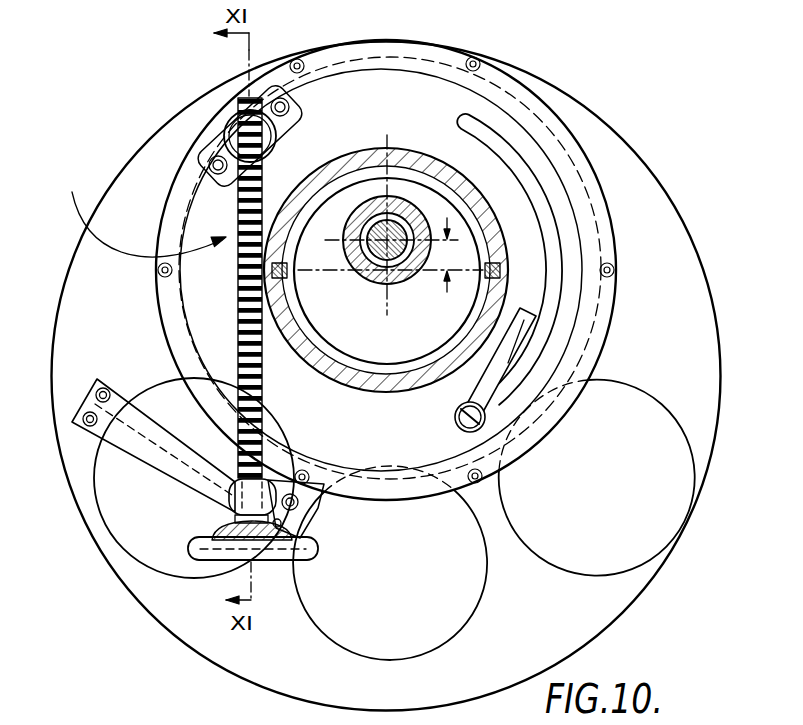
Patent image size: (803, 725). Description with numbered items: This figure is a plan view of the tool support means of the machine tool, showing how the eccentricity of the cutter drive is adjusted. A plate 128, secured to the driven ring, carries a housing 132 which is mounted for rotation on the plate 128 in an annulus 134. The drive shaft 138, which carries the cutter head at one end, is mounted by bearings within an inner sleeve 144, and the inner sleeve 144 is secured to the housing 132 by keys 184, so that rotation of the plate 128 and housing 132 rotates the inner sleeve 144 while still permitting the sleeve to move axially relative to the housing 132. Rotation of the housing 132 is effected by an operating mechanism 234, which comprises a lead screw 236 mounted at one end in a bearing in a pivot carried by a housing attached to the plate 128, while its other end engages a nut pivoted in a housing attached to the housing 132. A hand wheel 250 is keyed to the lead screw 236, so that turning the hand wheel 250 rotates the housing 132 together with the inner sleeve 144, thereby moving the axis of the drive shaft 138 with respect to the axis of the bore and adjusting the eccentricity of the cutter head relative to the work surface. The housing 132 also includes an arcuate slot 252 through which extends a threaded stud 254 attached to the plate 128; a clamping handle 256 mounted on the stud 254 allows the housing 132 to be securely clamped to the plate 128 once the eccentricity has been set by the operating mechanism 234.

The plate 128 is at (688, 315).
The housing 132 is at (507, 285).
The annulus 134 is at (592, 190).
The drive shaft 138 is at (366, 283).
The inner sleeve 144 is at (503, 252).
The keys 184 is at (505, 296).
The operating mechanism 234 is at (138, 208).
The lead screw 236 is at (267, 401).
The hand wheel 250 is at (195, 552).
The arcuate slot 252 is at (527, 178).
The threaded stud 254 is at (480, 432).
The clamping handle 256 is at (515, 340).